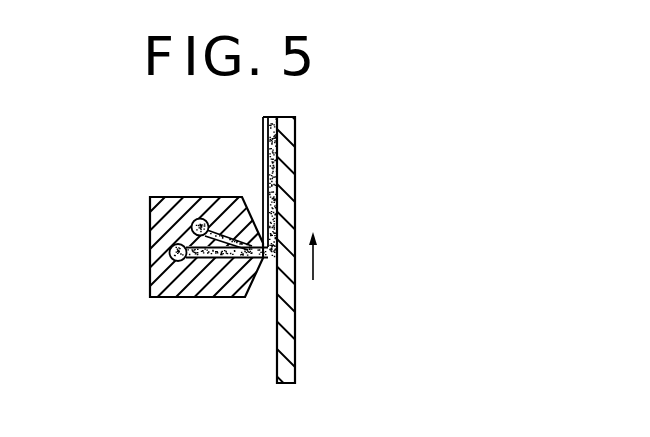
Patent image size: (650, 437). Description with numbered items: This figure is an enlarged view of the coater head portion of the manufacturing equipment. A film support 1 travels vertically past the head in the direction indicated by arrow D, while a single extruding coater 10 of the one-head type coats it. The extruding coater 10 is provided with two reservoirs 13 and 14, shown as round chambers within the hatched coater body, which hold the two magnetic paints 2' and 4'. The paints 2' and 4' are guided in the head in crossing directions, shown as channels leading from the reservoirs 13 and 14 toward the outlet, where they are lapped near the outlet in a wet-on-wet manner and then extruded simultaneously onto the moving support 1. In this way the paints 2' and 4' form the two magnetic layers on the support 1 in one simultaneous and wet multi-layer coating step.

The film support 1 is at (297, 327).
The paint 2' is at (225, 297).
The paint 4' is at (314, 187).
The extruding coater 10 is at (150, 236).
The reservoir 13 is at (178, 261).
The reservoir 14 is at (200, 218).
The arrow D is at (318, 254).